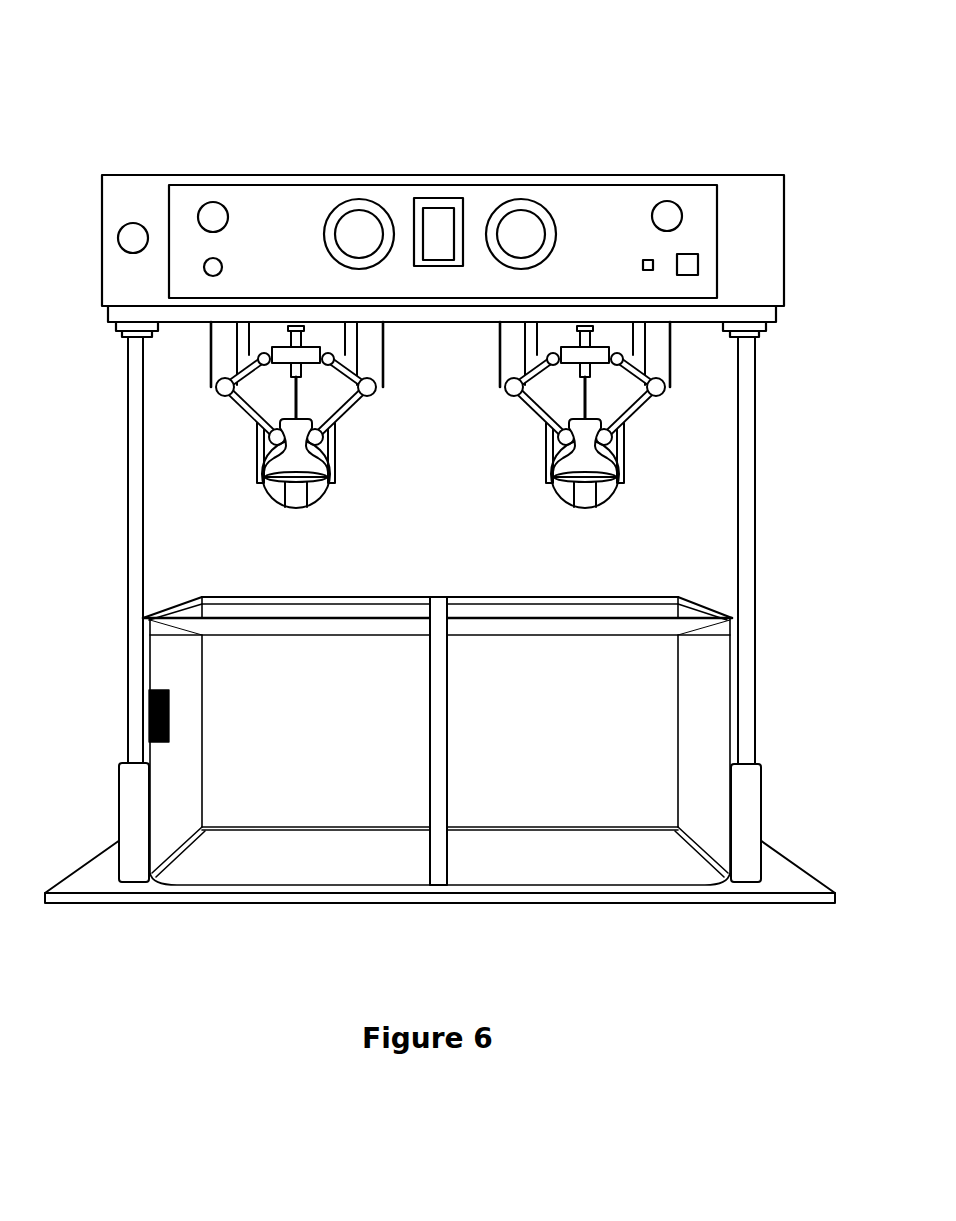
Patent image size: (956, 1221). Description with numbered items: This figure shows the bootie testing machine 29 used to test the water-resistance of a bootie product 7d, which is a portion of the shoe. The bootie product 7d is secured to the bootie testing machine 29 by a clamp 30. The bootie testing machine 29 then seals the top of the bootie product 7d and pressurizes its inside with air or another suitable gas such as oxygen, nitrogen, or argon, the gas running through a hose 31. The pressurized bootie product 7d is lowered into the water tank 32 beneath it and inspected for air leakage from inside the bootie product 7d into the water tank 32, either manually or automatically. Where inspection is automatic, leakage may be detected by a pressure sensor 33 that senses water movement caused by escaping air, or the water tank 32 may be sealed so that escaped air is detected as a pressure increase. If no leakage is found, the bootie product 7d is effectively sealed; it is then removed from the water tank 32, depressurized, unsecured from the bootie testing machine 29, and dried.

The bootie testing machine 29 is at (438, 118).
The clamp 30 is at (225, 412).
The hose 31 is at (615, 400).
The bootie product 7d is at (612, 463).
The water tank 32 is at (128, 619).
The pressure sensor 33 is at (128, 707).